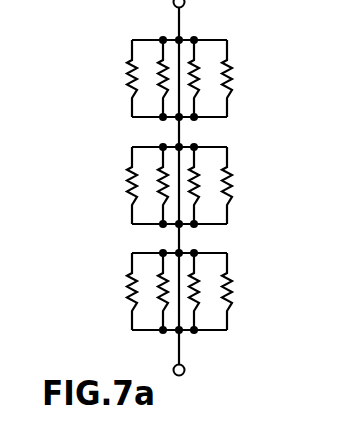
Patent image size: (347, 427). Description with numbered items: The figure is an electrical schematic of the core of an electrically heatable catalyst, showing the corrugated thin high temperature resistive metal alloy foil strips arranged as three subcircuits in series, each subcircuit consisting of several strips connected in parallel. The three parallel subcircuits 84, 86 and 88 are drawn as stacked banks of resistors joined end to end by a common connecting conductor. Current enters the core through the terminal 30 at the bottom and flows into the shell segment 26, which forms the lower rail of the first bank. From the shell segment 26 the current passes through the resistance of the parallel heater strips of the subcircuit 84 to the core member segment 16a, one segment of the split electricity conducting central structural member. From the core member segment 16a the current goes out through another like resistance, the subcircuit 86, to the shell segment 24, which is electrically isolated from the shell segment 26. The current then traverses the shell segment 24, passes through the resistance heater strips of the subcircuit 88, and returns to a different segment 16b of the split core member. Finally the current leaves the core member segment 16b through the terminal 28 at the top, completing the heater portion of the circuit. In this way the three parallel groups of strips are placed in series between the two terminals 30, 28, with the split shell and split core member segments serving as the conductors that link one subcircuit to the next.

The terminal 28 is at (181, 28).
The terminal 30 is at (181, 358).
The parallel subcircuit 88 is at (240, 72).
The parallel subcircuit 86 is at (120, 176).
The parallel subcircuit 84 is at (242, 295).
The shell segment 24 is at (140, 146).
The core member segment 16b is at (150, 40).
The core member segment 16a is at (136, 253).
The shell segment 26 is at (146, 331).